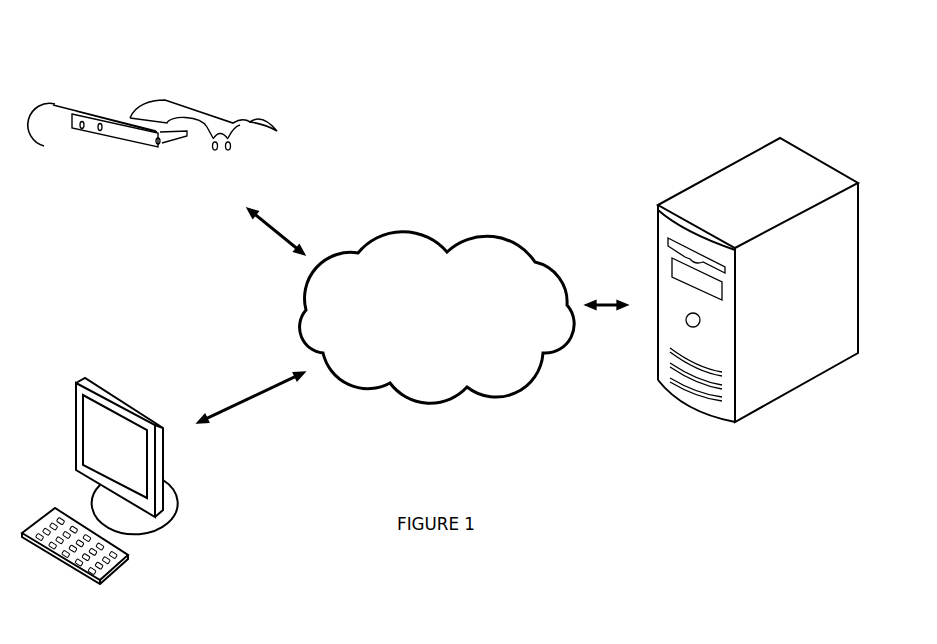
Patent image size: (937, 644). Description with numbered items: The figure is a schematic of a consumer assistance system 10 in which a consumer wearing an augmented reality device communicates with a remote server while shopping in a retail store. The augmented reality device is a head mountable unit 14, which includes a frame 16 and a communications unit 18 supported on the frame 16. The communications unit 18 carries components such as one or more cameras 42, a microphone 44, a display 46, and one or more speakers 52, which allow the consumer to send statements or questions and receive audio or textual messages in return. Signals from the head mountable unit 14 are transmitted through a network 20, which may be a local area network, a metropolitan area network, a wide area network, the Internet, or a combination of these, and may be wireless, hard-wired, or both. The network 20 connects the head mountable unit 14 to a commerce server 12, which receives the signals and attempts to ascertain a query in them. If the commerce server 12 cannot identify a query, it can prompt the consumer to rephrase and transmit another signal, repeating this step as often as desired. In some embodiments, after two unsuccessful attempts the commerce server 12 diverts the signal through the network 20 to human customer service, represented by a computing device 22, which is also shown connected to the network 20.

The consumer assistance system 10 is at (448, 125).
The commerce server 12 is at (750, 415).
The head mountable unit 14 is at (93, 62).
The frame 16 is at (192, 108).
The communications unit 18 is at (80, 193).
The network 20 is at (482, 396).
The computing device 22 is at (187, 545).
The cameras 42 is at (160, 148).
The microphone 44 is at (100, 132).
The display 46 is at (178, 140).
The speakers 52 is at (80, 129).